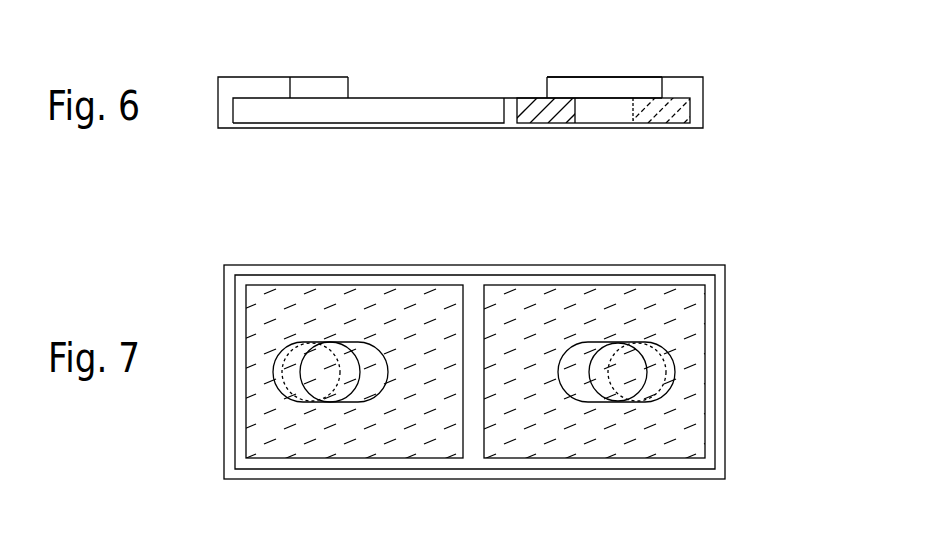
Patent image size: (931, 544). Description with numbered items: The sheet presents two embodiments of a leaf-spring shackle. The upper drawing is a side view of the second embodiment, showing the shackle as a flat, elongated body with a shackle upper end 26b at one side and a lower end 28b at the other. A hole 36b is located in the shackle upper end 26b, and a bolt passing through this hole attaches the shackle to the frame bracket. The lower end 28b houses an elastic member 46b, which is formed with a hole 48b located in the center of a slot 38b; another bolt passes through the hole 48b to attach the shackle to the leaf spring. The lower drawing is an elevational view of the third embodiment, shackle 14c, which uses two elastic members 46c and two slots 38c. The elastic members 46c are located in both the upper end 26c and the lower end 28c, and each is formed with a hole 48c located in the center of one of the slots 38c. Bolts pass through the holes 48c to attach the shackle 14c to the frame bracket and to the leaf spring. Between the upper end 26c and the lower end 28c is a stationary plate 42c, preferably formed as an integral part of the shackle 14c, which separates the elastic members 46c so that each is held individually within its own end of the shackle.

In FIG. 6, the shackle upper end 26b is at (218, 80).
In FIG. 6, the lower end 28b is at (705, 82).
In FIG. 6, the hole 36b is at (325, 86).
In FIG. 6, the slot 38b is at (640, 88).
In FIG. 6, the elastic member 46b is at (678, 113).
In FIG. 6, the hole 48b is at (603, 113).
In FIG. 7, the shackle 14c is at (242, 238).
In FIG. 7, the upper end 26c is at (222, 425).
In FIG. 7, the lower end 28c is at (725, 427).
In FIG. 7, the stationary plate 42c is at (472, 300).
In FIG. 7, the elastic members 46c is at (265, 305).
In FIG. 7, the slots 38c is at (350, 403).
In FIG. 7, the holes 48c is at (350, 370).